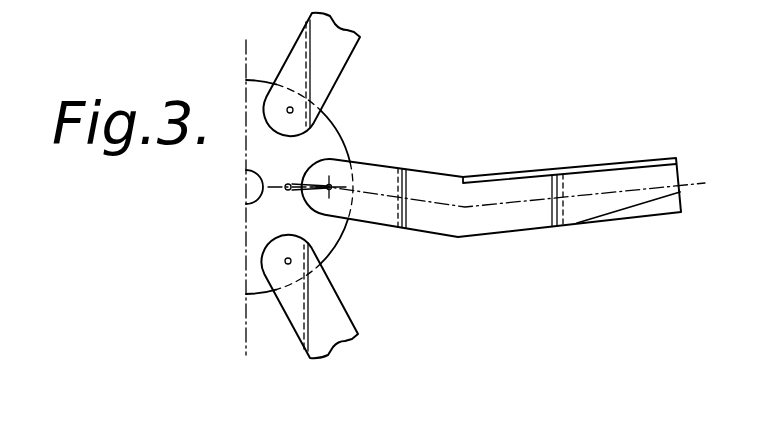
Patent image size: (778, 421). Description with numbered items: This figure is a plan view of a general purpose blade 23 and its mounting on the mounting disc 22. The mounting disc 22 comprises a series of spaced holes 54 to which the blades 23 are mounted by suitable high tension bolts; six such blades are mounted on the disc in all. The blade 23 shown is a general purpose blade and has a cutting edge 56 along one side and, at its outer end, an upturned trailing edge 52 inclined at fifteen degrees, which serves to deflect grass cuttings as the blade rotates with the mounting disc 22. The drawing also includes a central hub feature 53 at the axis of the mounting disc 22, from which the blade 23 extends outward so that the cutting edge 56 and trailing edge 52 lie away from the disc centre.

The mounting disc 22 is at (333, 135).
The blade 23 is at (513, 224).
The trailing edge 52 is at (660, 210).
The hub 53 is at (257, 188).
The holes 54 is at (331, 190).
The cutting edge 56 is at (583, 161).